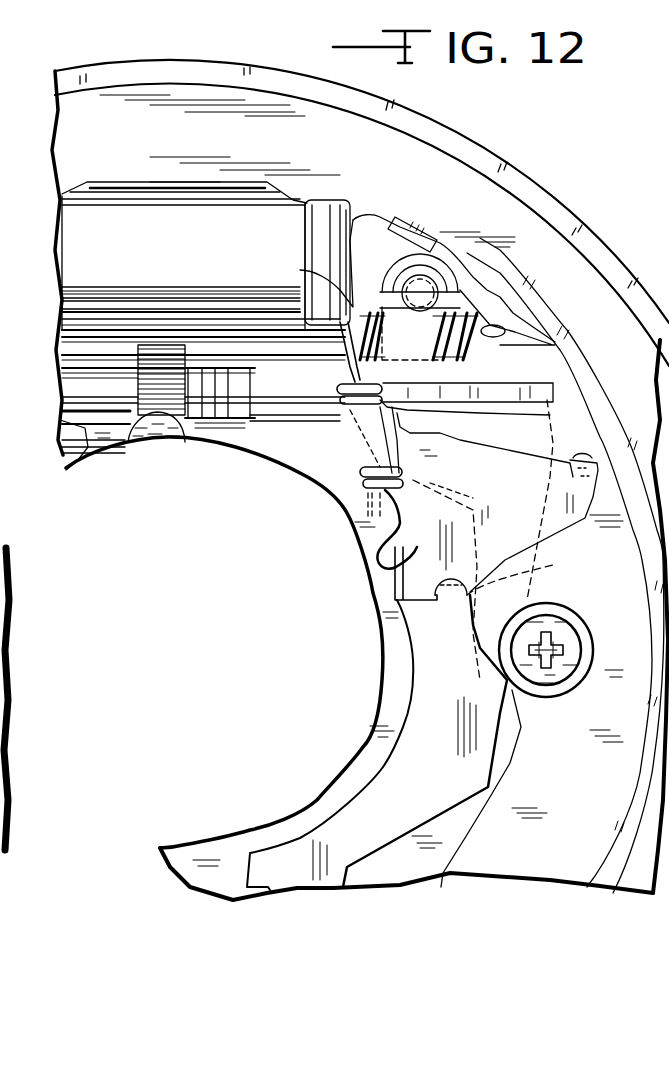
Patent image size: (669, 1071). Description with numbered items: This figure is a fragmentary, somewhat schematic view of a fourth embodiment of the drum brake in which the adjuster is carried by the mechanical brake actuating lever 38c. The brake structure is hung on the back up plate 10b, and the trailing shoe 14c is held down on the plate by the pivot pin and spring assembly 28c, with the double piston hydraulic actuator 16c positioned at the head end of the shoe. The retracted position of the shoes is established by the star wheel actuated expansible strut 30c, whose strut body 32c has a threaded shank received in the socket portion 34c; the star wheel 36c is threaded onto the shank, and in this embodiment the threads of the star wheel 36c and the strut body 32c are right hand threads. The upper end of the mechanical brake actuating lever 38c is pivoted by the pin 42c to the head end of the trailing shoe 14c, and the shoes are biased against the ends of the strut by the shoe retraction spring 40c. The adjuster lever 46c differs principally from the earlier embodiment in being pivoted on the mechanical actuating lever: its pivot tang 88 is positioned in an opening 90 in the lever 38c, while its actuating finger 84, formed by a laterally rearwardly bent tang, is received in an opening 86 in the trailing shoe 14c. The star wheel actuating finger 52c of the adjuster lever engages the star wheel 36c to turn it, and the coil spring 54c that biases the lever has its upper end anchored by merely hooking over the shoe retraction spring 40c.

The housing 10b is at (549, 192).
The trailing shoe 14c is at (600, 773).
The double piston hydraulic actuator 16c is at (182, 244).
The pivot pin and spring assembly 28c is at (592, 648).
The strut 30c is at (213, 413).
The strut body 32c is at (257, 437).
The socket portion 34c is at (66, 462).
The star wheel 36c is at (140, 376).
The mechanical brake actuating lever 38c is at (357, 800).
The shoe retraction spring 40c is at (102, 288).
The pin 42c is at (417, 272).
The adjuster lever 46c is at (313, 480).
The star wheel actuating finger 52c is at (218, 447).
The spring 54c is at (375, 498).
The actuating finger 84 is at (577, 480).
The opening 86 is at (573, 457).
The pivot tang 88 is at (450, 598).
The opening 90 is at (526, 573).